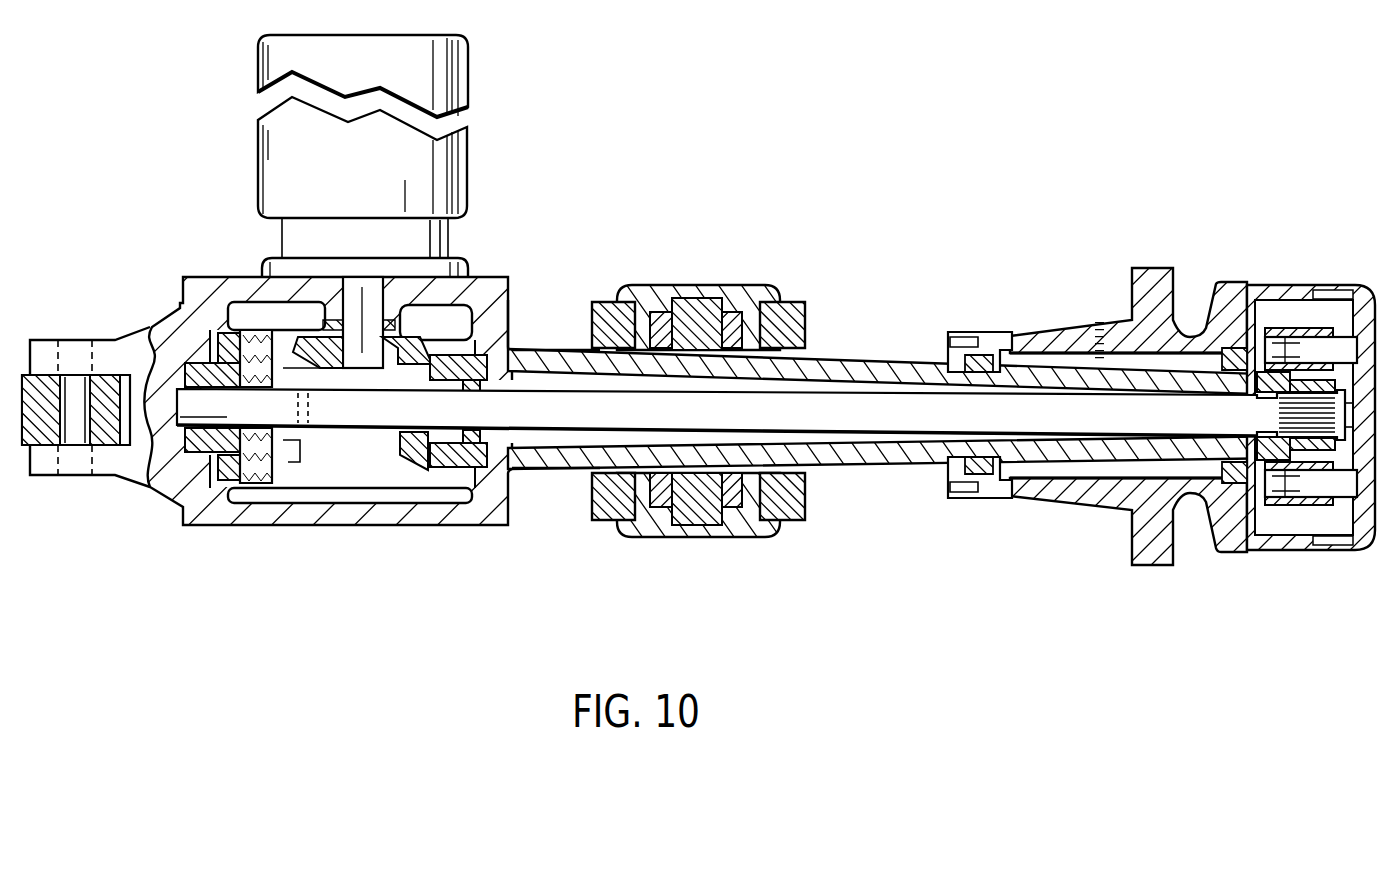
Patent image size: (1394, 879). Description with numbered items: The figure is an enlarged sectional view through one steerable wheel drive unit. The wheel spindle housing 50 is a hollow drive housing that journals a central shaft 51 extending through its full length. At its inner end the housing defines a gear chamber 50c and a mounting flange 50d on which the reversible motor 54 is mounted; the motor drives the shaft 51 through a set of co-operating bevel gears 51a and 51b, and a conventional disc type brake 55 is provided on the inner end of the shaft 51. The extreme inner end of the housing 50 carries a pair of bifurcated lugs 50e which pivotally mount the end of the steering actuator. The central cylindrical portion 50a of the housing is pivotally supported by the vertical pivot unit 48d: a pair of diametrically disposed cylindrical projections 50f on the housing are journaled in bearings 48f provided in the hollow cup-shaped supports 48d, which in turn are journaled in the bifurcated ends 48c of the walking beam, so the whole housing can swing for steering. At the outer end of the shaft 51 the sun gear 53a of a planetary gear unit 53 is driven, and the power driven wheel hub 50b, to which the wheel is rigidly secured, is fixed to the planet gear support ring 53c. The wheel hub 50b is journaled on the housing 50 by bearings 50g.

The bifurcated ends 48c is at (607, 303).
The vertical pivot unit 48d is at (715, 272).
The bearings 48f is at (735, 320).
The wheel spindle housing 50 is at (917, 478).
The central cylindrical portion 50a is at (566, 473).
The wheel hub 50b is at (1228, 270).
The gear chamber 50c is at (375, 503).
The mounting flange 50d is at (520, 282).
The bifurcated lugs 50e is at (45, 453).
The cylindrical projections 50f is at (690, 322).
The bearings 50g is at (997, 500).
The central shaft 51 is at (534, 390).
The bevel gear 51a is at (402, 456).
The bevel gear 51b is at (327, 352).
The planetary gear unit 53 is at (1322, 347).
The sun gear 53a is at (1307, 420).
The planet gear support ring 53c is at (1360, 300).
The reversible motor 54 is at (466, 160).
The disc type brake 55 is at (282, 460).